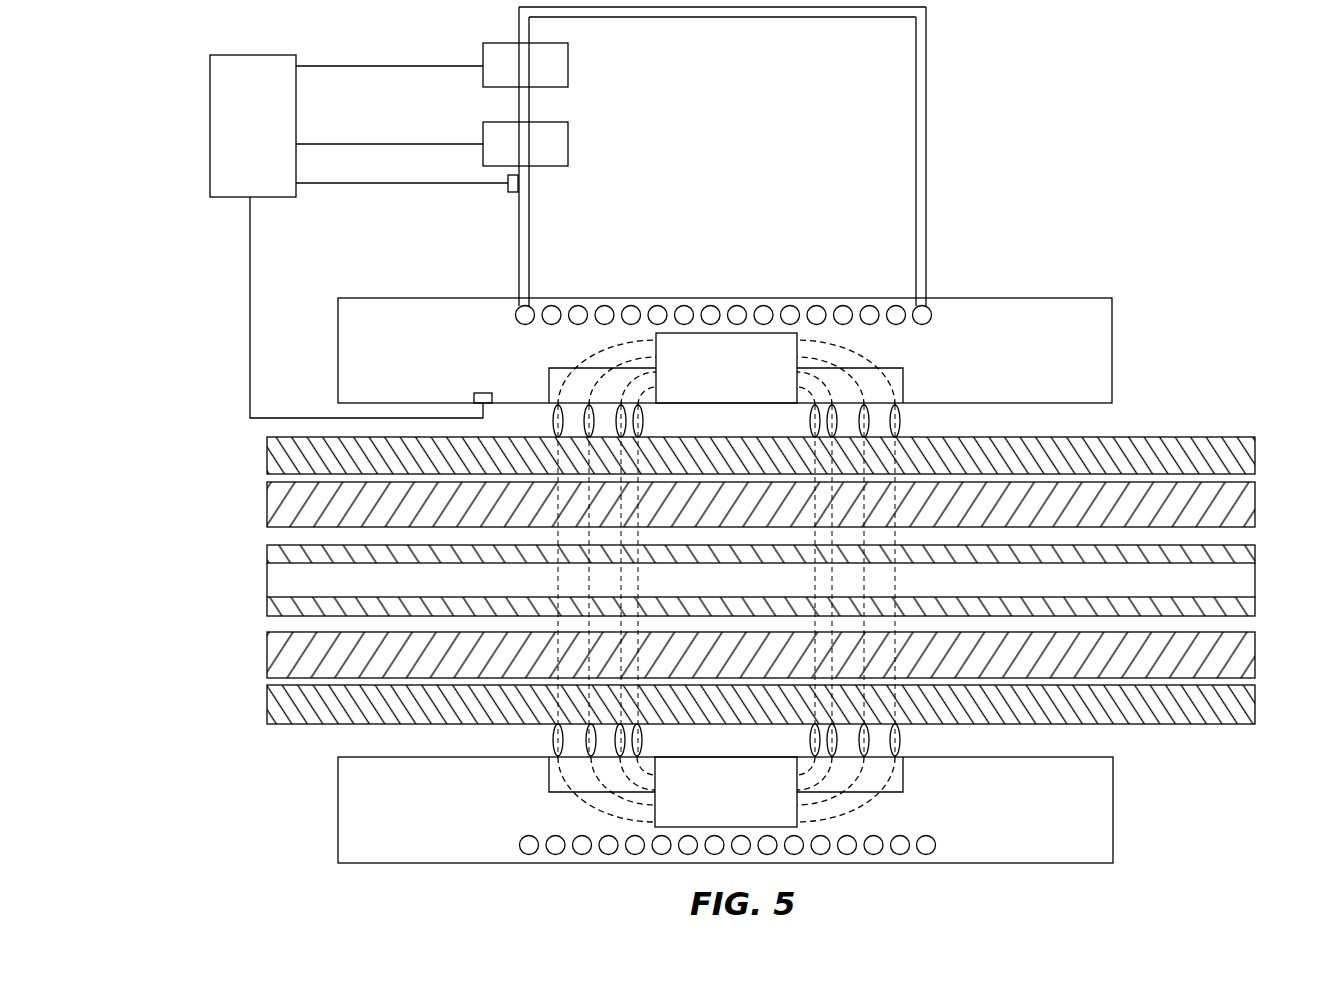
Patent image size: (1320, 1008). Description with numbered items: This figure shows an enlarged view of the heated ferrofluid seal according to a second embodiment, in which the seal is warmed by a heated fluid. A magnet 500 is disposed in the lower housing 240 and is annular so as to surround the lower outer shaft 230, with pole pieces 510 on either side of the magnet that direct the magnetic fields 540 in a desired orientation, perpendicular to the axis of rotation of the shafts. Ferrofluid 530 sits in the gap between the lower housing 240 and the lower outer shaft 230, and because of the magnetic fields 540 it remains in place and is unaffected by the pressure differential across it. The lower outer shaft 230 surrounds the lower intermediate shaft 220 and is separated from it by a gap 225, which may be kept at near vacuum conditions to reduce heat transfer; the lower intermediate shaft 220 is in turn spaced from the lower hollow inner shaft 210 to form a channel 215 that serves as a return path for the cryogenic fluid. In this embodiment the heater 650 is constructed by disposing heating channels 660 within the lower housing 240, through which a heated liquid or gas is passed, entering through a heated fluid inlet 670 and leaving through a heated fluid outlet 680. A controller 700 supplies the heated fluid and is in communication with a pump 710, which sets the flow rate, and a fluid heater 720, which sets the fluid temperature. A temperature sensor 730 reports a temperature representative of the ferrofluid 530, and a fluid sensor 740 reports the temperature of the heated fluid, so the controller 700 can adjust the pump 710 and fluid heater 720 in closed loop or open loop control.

The controller 700 is at (210, 136).
The pump 710 is at (568, 62).
The fluid heater 720 is at (568, 140).
The fluid sensor 740 is at (508, 181).
The heated fluid inlet 670 is at (518, 257).
The heater 650 is at (994, 230).
The heated fluid outlet 680 is at (927, 265).
The pole pieces 510 is at (862, 368).
The magnet 500 is at (692, 333).
The heating channels 660 is at (838, 305).
The lower housing 240 is at (338, 338).
The temperature sensor 730 is at (483, 393).
The lower outer shaft 230 is at (267, 460).
The lower intermediate shaft 220 is at (267, 510).
The lower hollow inner shaft 210 is at (267, 587).
The channel 215 is at (268, 624).
The gap 225 is at (268, 683).
The ferrofluid 530 is at (898, 742).
The magnetic fields 540 is at (820, 818).